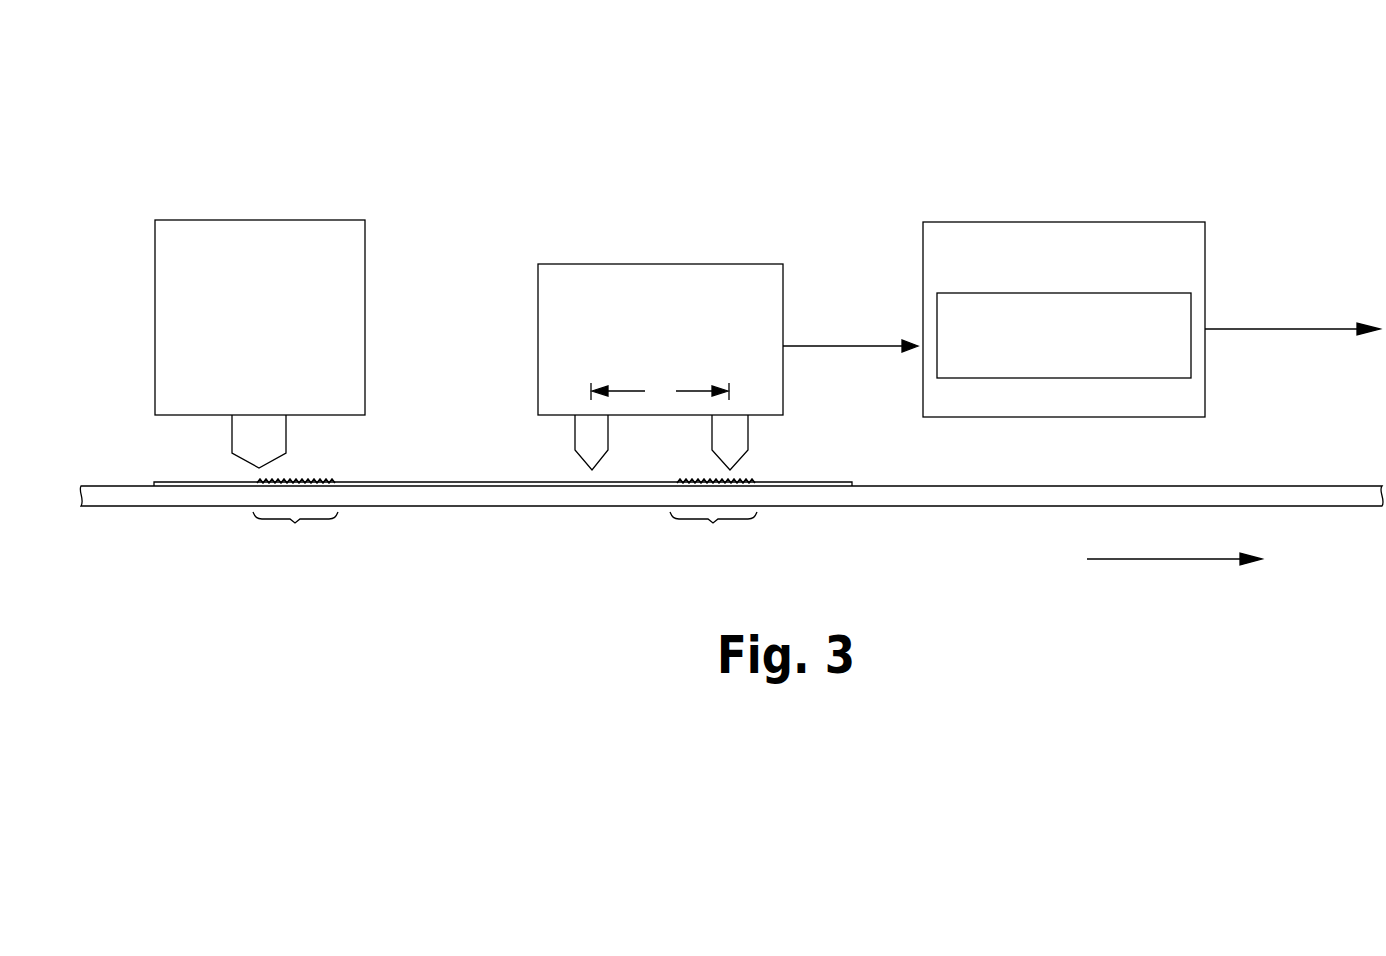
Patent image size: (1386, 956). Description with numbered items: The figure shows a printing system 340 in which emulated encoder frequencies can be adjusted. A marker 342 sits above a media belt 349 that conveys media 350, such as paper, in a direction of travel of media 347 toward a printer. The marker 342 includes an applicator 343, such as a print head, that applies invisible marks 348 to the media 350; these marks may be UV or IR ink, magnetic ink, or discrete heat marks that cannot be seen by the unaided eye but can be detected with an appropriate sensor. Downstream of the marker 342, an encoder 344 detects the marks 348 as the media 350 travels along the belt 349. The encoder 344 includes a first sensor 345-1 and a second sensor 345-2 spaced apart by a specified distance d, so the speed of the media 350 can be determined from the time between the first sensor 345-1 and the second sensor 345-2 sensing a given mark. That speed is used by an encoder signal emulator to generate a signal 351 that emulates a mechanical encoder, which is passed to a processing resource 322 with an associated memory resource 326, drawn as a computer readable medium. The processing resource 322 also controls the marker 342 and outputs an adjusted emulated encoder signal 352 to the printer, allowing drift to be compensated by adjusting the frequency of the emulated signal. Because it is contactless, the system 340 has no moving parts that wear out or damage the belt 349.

The printing system 340 is at (1180, 110).
The marker 342 is at (277, 365).
The applicator 343 is at (238, 448).
The encoder 344 is at (677, 360).
The first sensor 345-1 is at (582, 460).
The second sensor 345-2 is at (748, 440).
The processing resource 322 is at (1188, 259).
The memory resource 326 is at (1167, 365).
The signal 351 is at (852, 345).
The adjusted emulated encoder signal 352 is at (1287, 330).
The media belt 349 is at (960, 495).
The media 350 is at (447, 484).
The marks 348 is at (295, 517).
The direction of travel of media 347 is at (1174, 573).